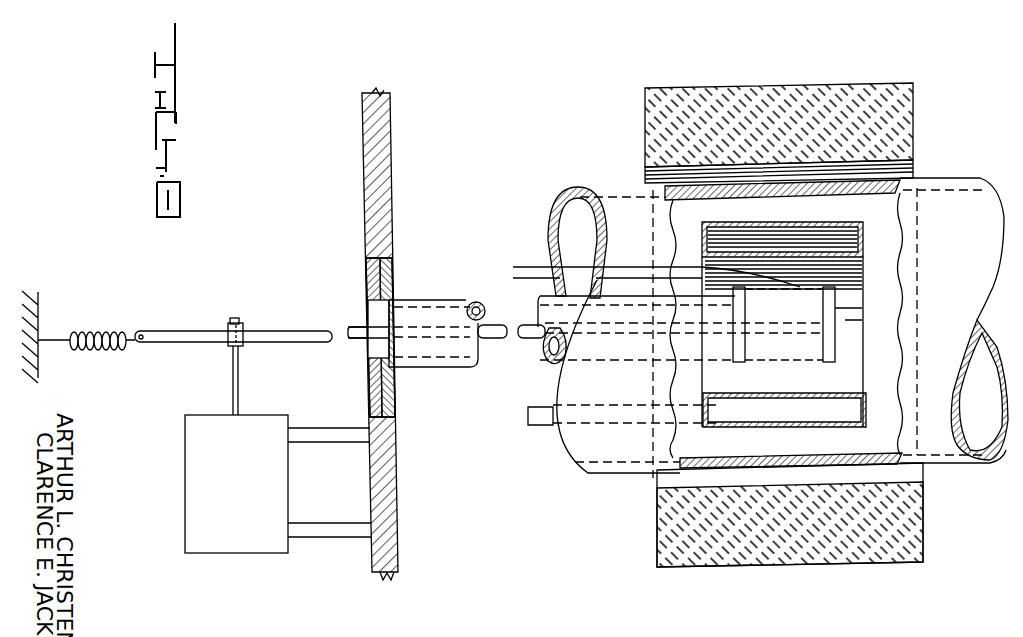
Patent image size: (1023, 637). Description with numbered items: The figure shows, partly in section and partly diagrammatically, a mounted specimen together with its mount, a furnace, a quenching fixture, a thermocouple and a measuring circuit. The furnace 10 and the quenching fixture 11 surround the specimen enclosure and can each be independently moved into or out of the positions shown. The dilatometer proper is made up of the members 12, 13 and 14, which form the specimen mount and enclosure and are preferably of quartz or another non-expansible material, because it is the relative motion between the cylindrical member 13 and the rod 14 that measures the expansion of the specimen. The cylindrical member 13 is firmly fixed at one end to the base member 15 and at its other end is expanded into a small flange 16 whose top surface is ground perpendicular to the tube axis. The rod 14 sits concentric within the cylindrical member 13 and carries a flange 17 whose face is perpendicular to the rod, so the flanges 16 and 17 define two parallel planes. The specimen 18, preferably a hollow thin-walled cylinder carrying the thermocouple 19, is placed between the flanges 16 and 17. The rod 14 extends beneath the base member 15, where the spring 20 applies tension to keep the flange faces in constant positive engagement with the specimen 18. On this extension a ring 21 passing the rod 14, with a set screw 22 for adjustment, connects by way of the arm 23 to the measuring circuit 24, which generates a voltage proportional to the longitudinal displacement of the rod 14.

The furnace 10 is at (677, 90).
The quenching fixture 11 is at (545, 420).
The member 12 is at (602, 190).
The cylindrical member 13 is at (455, 300).
The rod 14 is at (307, 332).
The base member 15 is at (390, 172).
The flange 16 is at (740, 363).
The flange 17 is at (836, 306).
The specimen 18 is at (800, 363).
The thermocouple 19 is at (533, 266).
The spring 20 is at (98, 350).
The ring 21 is at (228, 341).
The set screw 22 is at (236, 318).
The arm 23 is at (240, 380).
The measuring circuit 24 is at (233, 543).